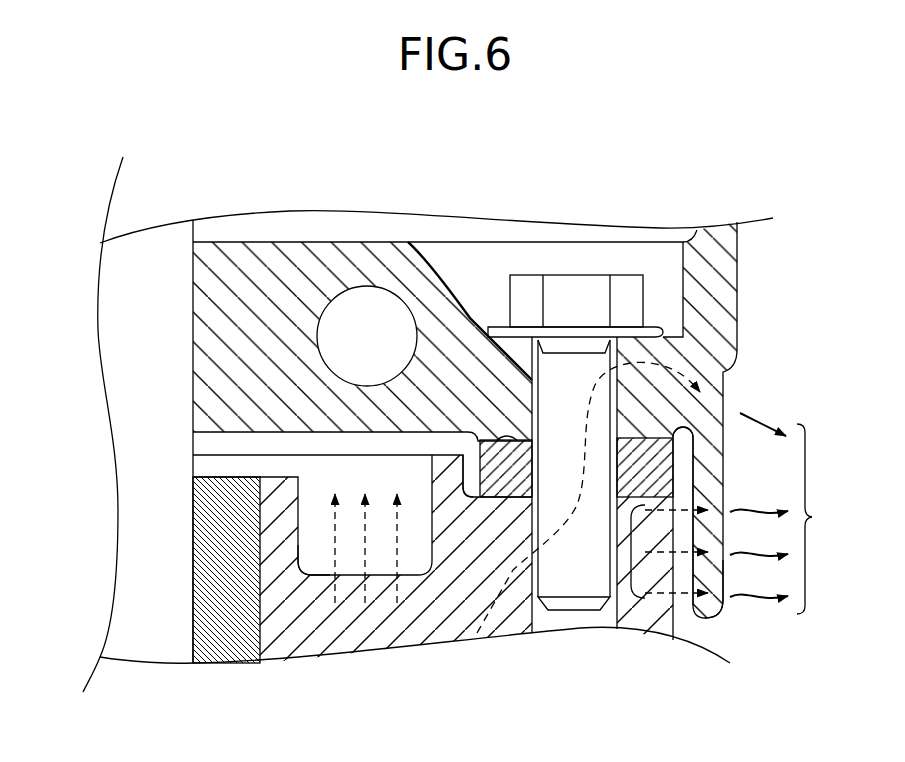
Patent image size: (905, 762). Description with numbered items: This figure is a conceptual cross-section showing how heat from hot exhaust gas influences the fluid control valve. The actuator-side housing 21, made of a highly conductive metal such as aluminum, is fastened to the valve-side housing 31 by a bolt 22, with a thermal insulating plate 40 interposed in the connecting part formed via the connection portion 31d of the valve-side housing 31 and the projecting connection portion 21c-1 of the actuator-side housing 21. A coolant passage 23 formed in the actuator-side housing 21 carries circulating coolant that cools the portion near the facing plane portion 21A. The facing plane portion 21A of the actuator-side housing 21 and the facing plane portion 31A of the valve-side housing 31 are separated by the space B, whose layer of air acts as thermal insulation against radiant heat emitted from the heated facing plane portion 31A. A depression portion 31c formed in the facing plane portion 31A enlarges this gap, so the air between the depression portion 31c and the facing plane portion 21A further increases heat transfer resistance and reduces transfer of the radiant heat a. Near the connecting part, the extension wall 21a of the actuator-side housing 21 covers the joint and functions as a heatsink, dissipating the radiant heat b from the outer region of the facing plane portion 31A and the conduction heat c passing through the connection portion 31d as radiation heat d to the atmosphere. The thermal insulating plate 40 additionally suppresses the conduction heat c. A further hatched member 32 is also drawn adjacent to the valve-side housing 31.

The actuator-side housing 21 is at (737, 353).
The facing plane portion 21A is at (262, 440).
The extension wall 21a is at (722, 610).
The connection portion 21c-1 is at (483, 437).
The bolt 22 is at (628, 298).
The coolant passage 23 is at (357, 312).
The valve-side housing 31 is at (673, 620).
The facing plane portion 31A is at (442, 445).
The depression portion 31c is at (324, 560).
The connection portion 31d is at (468, 492).
The circuit board 32 is at (141, 648).
The thermal insulating plate 40 is at (693, 438).
The space B is at (222, 445).
The radiant heat a is at (407, 606).
The radiant heat b is at (628, 553).
The conduction heat c is at (513, 578).
The radiation heat d is at (786, 513).